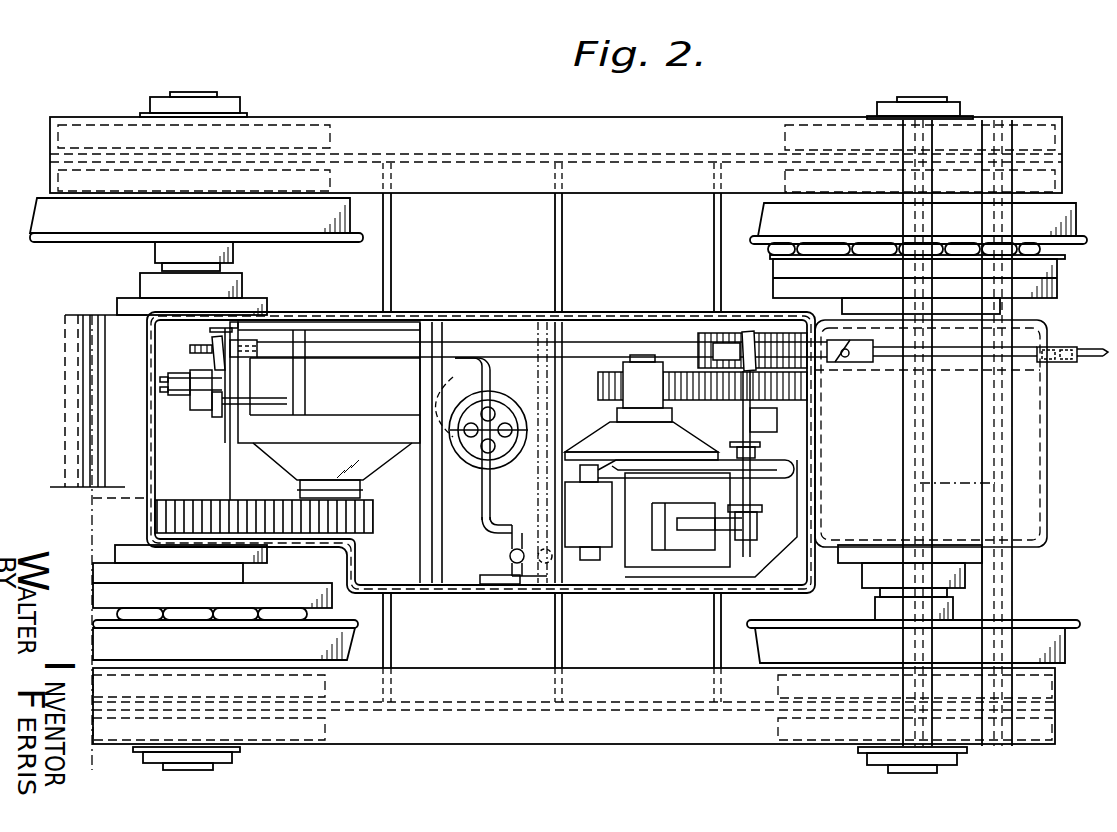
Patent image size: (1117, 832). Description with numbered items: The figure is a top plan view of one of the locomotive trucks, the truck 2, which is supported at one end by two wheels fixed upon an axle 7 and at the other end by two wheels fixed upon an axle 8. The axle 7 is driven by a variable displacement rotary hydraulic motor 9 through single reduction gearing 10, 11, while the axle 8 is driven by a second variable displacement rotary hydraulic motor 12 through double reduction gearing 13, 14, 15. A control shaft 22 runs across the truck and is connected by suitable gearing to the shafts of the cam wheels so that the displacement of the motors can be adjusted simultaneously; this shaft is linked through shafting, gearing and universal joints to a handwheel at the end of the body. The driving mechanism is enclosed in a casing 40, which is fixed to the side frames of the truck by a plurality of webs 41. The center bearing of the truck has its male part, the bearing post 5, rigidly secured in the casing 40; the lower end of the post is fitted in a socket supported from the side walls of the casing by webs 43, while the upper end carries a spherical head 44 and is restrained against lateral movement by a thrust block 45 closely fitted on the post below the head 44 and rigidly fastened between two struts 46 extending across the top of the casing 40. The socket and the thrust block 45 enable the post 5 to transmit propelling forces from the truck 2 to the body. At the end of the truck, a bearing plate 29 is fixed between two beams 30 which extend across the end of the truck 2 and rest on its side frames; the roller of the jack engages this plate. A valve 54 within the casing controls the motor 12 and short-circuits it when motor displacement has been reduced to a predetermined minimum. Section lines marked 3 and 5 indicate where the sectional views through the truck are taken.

The truck 2 is at (14, 293).
The section line 3- 3 is at (147, 533).
The bearing post 5 is at (488, 114).
The axle 7 is at (190, 770).
The axle 8 is at (904, 775).
The variable displacement rotary hydraulic motor 9 is at (290, 411).
The single reduction gearing 10 is at (374, 504).
The single reduction gearing 11 is at (270, 484).
The variable displacement rotary hydraulic motor 12 is at (681, 492).
The double reduction gearing 13 is at (600, 386).
The double reduction gearing 14 is at (709, 401).
The double reduction gearing 15 is at (882, 366).
The control shaft 22 is at (624, 345).
The bearing plate 29 is at (960, 472).
The beams 30 is at (905, 606).
The casing 40 is at (649, 319).
The webs 41 is at (393, 251).
The webs 43 is at (485, 586).
The spherical head 44 is at (476, 466).
The thrust block 45 is at (522, 468).
The struts 46 is at (545, 319).
The valve 54 is at (679, 510).